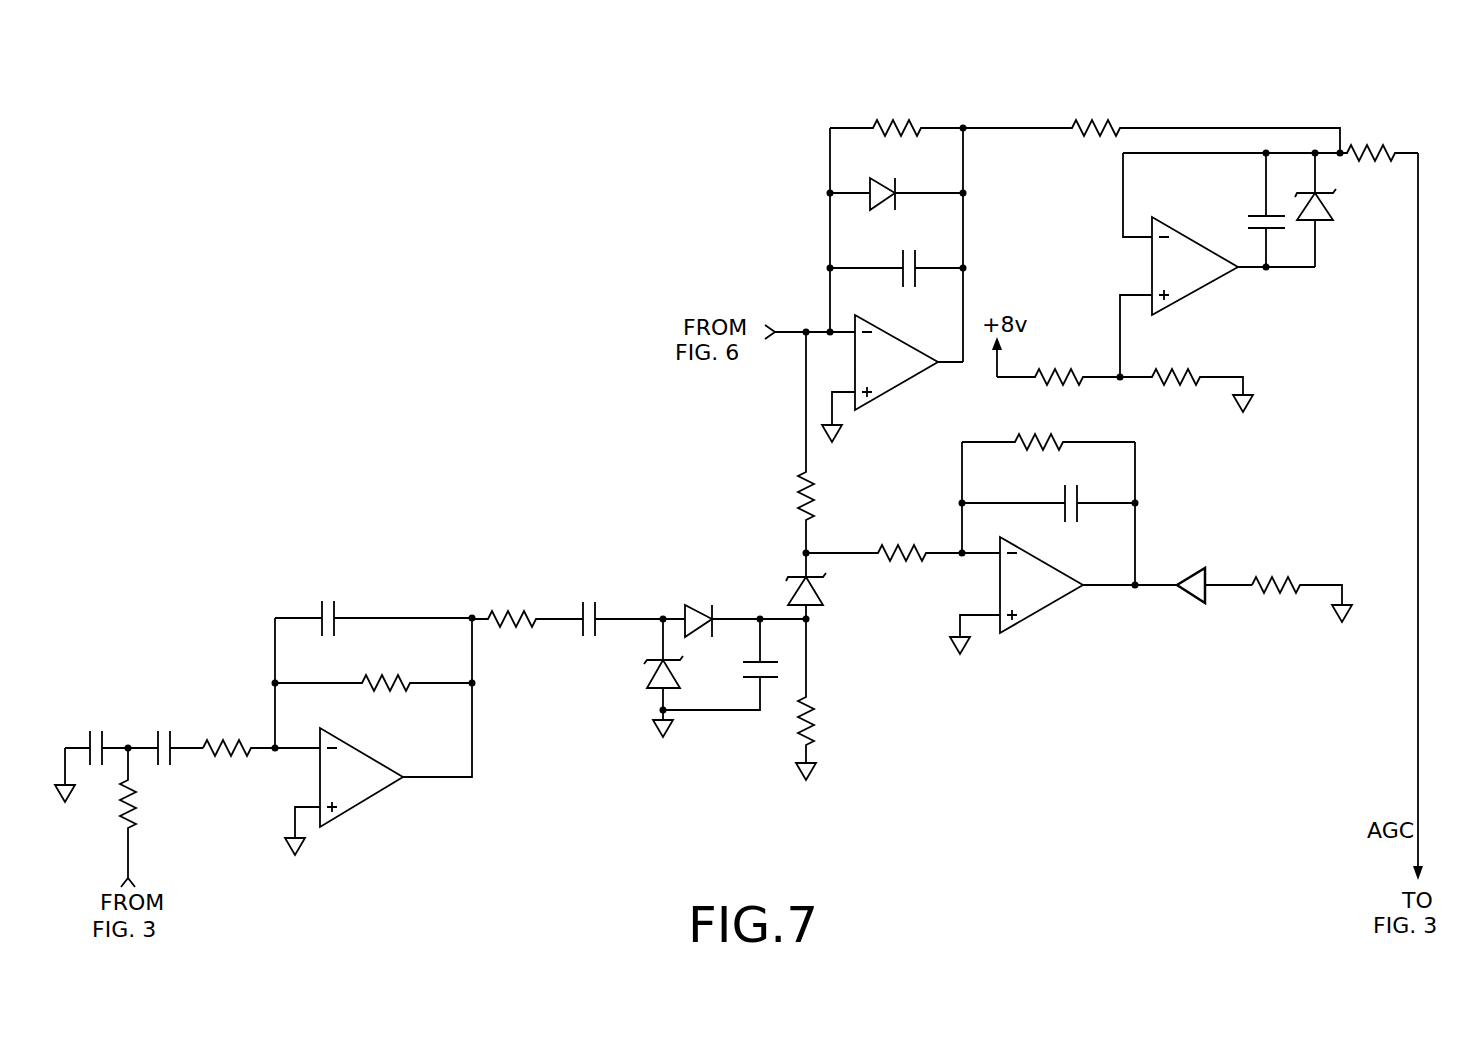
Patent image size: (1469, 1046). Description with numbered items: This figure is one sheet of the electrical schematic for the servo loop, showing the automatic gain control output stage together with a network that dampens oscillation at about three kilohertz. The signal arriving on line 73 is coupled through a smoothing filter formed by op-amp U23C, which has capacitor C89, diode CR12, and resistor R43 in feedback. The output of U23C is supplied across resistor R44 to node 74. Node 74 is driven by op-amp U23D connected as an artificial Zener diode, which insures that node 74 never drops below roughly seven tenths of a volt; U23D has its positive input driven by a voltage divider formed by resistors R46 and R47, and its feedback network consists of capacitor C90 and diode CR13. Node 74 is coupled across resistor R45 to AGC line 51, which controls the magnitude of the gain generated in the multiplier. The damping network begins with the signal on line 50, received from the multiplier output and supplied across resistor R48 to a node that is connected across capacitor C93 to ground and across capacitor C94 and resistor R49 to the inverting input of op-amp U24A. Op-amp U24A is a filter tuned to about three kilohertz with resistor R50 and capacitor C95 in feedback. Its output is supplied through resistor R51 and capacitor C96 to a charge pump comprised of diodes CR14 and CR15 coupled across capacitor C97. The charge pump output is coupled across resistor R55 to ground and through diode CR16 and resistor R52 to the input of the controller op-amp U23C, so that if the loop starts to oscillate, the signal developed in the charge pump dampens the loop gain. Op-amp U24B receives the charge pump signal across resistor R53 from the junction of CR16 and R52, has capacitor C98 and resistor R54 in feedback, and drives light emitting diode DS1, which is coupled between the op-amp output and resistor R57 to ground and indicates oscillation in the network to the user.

The line 50 is at (122, 855).
The AGC line 51 is at (1416, 740).
The line 73 is at (792, 332).
The node 74 is at (1347, 150).
The resistor R43 is at (889, 126).
The resistor R44 is at (1085, 127).
The resistor R45 is at (1371, 150).
The resistor R46 is at (1052, 375).
The resistor R47 is at (1173, 372).
The resistor R48 is at (140, 793).
The resistor R49 is at (228, 745).
The resistor R50 is at (385, 678).
The resistor R51 is at (500, 614).
The resistor R52 is at (812, 500).
The resistor R53 is at (895, 553).
The resistor R54 is at (1040, 440).
The resistor R55 is at (815, 722).
The resistor R57 is at (1270, 580).
The capacitor C89 is at (915, 262).
The capacitor C90 is at (1258, 218).
The capacitor C93 is at (120, 688).
The capacitor C94 is at (170, 738).
The capacitor C95 is at (322, 610).
The capacitor C96 is at (597, 608).
The capacitor C97 is at (778, 676).
The capacitor C98 is at (1065, 495).
The diode CR12 is at (912, 158).
The diode CR13 is at (1323, 195).
The diode CR14 is at (715, 604).
The diode CR15 is at (660, 695).
The diode CR16 is at (818, 568).
The op-amp U23C is at (896, 362).
The op-amp U23D is at (1195, 266).
The op-amp U24A is at (361, 777).
The op-amp U24B is at (1041, 585).
The light emitting diode DS1 is at (1190, 595).